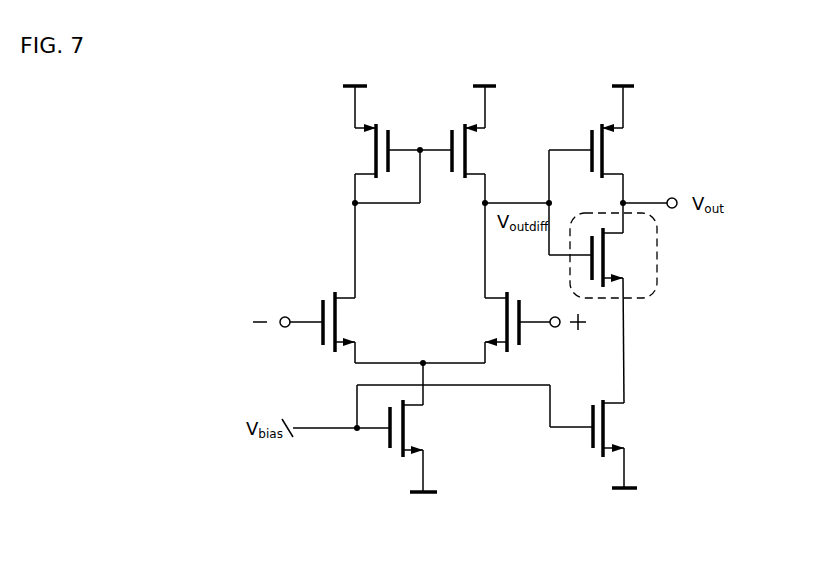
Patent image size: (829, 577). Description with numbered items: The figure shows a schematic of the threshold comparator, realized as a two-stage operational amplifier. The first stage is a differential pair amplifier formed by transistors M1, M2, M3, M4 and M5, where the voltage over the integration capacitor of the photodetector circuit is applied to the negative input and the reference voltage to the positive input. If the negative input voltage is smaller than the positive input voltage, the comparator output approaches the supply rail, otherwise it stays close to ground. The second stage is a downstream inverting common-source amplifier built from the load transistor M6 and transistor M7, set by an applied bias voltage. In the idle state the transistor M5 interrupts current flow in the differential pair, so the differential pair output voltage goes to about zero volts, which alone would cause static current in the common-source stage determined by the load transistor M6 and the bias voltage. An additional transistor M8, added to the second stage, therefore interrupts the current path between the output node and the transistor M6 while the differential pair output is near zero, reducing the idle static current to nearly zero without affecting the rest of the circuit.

The differential pair transistor M1 is at (348, 322).
The differential pair transistor M2 is at (492, 322).
The differential pair transistor M3 is at (363, 151).
The differential pair transistor M4 is at (474, 151).
The transistor M5 is at (414, 428).
The load transistor M6 is at (613, 151).
The common-source amplifier transistor M7 is at (617, 428).
The additional transistor M8 is at (613, 255).